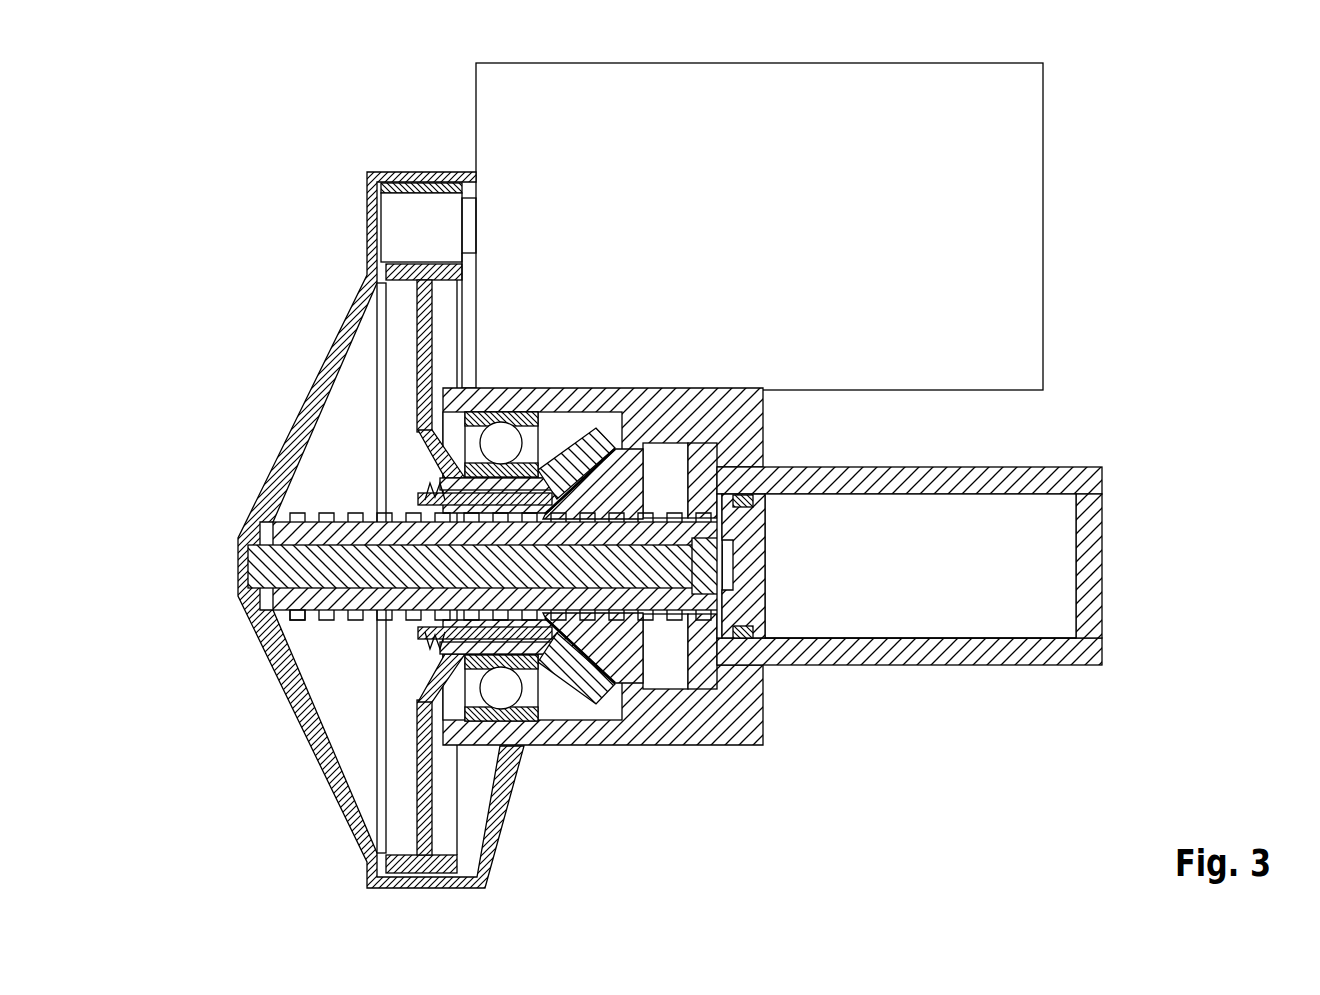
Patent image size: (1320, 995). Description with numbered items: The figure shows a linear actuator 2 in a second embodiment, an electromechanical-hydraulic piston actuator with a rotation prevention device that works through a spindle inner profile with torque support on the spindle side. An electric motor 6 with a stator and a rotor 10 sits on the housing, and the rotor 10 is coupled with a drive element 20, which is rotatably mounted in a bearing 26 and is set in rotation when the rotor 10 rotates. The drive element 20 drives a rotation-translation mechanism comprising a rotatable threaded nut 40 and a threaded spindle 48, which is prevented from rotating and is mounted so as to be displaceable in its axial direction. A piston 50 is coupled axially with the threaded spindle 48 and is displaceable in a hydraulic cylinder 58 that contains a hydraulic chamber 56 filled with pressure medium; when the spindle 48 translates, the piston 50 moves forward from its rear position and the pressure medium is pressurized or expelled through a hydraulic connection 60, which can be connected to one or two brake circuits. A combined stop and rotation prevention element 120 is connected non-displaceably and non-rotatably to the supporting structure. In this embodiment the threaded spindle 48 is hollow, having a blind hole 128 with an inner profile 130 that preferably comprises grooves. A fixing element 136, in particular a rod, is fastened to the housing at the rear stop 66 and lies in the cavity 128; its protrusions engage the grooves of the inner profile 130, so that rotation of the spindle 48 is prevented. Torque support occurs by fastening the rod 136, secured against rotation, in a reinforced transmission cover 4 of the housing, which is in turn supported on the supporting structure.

The linear actuator 2 is at (1100, 86).
The transmission cover 4 is at (337, 345).
The electric motor 6 is at (641, 135).
The rotor 10 is at (425, 210).
The drive element 20 is at (390, 868).
The bearing 26 is at (522, 720).
The threaded nut 40 is at (638, 683).
The threaded spindle 48 is at (466, 567).
The piston 50 is at (750, 567).
The hydraulic chamber 56 is at (953, 600).
The hydraulic cylinder 58 is at (862, 655).
The hydraulic connection 60 is at (954, 620).
The rear stop 66 is at (222, 533).
The combined stop and rotation prevention element 120 is at (672, 673).
The blind hole 128 is at (335, 618).
The inner profile 130 is at (318, 512).
The fixing element 136 is at (250, 570).